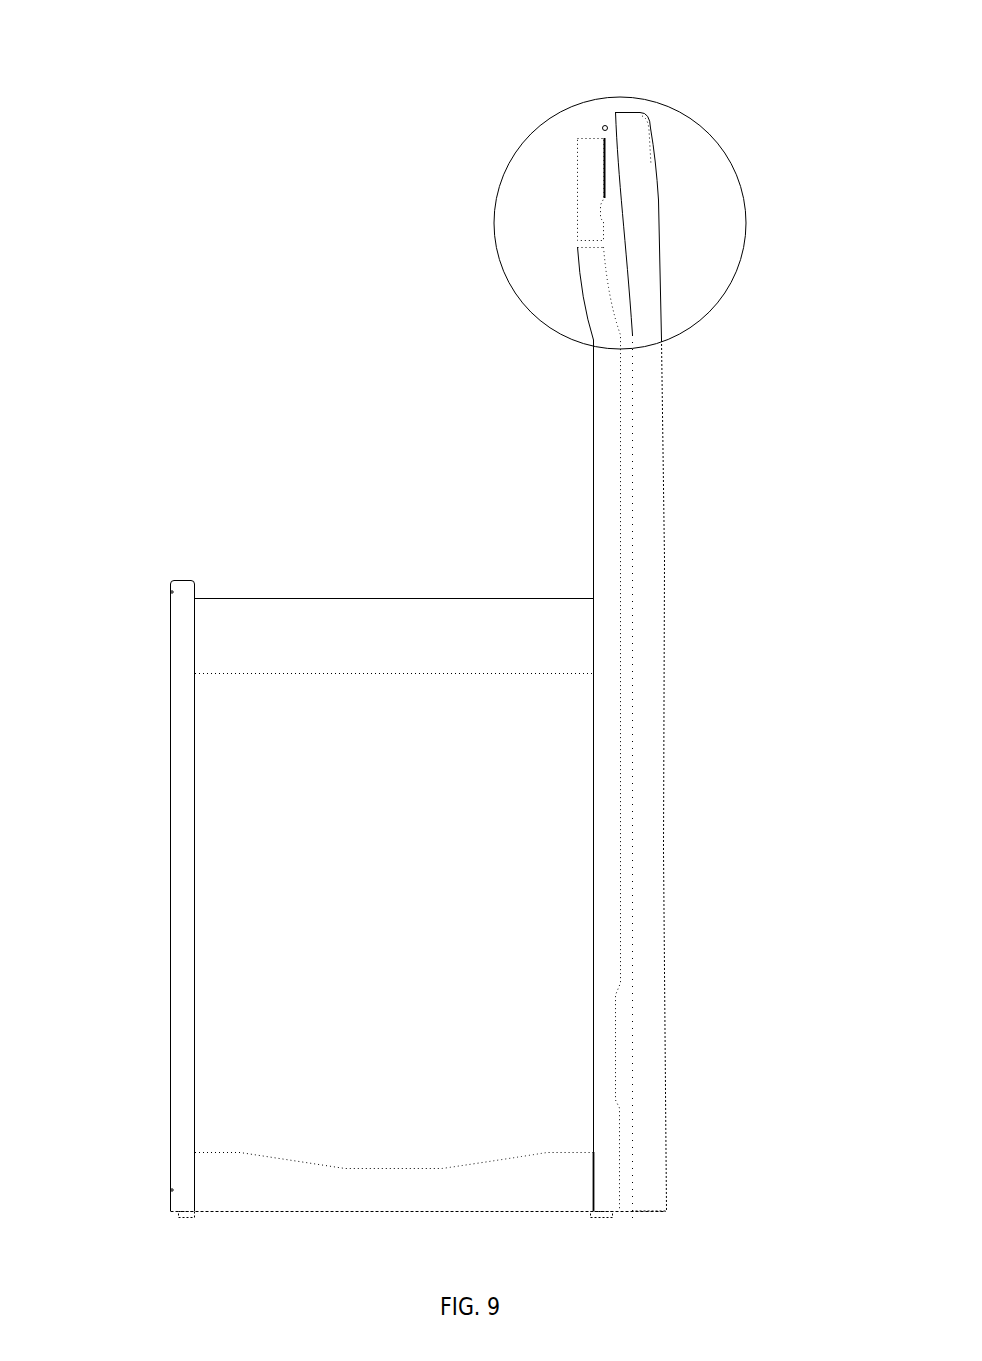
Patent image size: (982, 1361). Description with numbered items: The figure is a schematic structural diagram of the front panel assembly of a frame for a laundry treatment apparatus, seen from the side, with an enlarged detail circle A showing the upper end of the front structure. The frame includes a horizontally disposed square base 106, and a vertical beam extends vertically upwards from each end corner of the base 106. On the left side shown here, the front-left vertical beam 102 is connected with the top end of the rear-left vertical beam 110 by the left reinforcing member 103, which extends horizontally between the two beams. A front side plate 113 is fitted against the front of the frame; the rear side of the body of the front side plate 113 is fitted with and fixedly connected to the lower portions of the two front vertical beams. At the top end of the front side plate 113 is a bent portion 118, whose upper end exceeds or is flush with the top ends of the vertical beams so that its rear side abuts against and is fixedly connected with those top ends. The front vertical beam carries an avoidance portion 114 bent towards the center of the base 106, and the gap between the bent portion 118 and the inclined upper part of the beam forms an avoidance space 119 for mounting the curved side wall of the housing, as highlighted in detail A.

The front-left vertical beam 102 is at (613, 478).
The left reinforcing member 103 is at (306, 612).
The base 106 is at (407, 1183).
The rear-left vertical beam 110 is at (183, 642).
The front side plate 113 is at (652, 557).
The avoidance portion 114 is at (591, 272).
The bent portion 118 is at (647, 170).
The avoidance space 119 is at (615, 232).
The detail region A is at (493, 228).